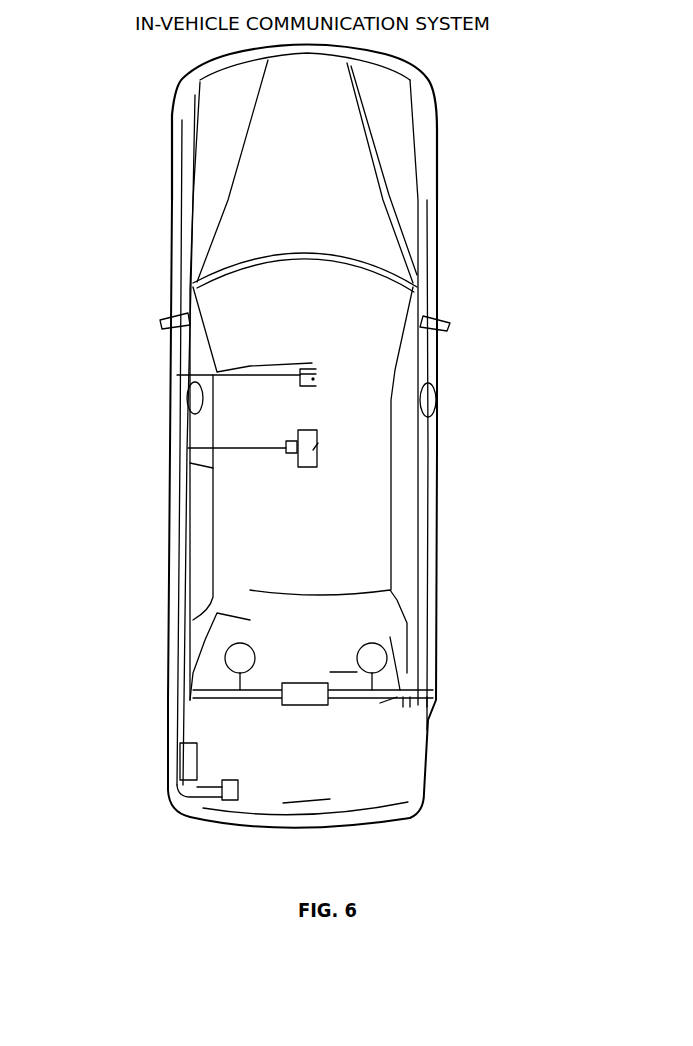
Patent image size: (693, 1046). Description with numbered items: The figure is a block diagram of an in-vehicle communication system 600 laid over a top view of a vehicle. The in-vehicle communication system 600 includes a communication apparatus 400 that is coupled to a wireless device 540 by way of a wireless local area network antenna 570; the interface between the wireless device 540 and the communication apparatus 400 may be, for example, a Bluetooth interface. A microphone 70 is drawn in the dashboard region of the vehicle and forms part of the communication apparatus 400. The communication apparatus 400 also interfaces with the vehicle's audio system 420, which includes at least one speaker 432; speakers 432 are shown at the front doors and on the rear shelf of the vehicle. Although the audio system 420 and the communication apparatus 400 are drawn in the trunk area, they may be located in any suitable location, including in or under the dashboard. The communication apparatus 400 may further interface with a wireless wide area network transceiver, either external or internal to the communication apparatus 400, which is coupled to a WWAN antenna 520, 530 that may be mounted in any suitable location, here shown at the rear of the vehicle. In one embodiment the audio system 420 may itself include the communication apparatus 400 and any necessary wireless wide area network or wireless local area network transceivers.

The in-vehicle communication system 600 is at (669, 119).
The microphone 70 is at (392, 362).
The speaker 432 is at (357, 657).
The wireless local area network antenna 570 is at (286, 446).
The wireless device 540 is at (360, 447).
The audio system 420 is at (193, 703).
The communication apparatus 400 is at (193, 760).
The WWAN antenna 520 is at (230, 800).
The WWAN antenna 530 is at (217, 790).